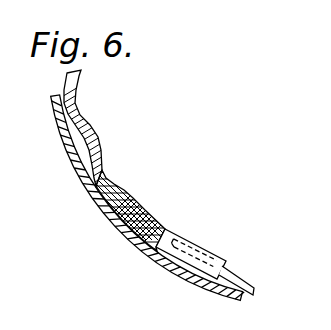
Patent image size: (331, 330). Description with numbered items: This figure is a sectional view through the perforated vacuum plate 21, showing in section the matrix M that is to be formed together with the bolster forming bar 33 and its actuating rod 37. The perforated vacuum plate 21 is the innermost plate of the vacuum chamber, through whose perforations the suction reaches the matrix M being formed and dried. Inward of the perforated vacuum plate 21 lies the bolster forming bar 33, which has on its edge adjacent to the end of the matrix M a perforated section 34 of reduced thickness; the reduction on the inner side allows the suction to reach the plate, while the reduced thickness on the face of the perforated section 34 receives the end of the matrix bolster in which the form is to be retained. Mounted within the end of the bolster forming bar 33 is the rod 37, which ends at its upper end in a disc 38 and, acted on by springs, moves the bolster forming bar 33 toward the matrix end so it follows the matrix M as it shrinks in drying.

The perforated vacuum plate 21 is at (114, 221).
The molding member M is at (97, 149).
The perforated section 34 is at (150, 221).
The bolster forming bar 33 is at (216, 261).
The disc 38 is at (185, 252).
The rod 37 is at (241, 282).